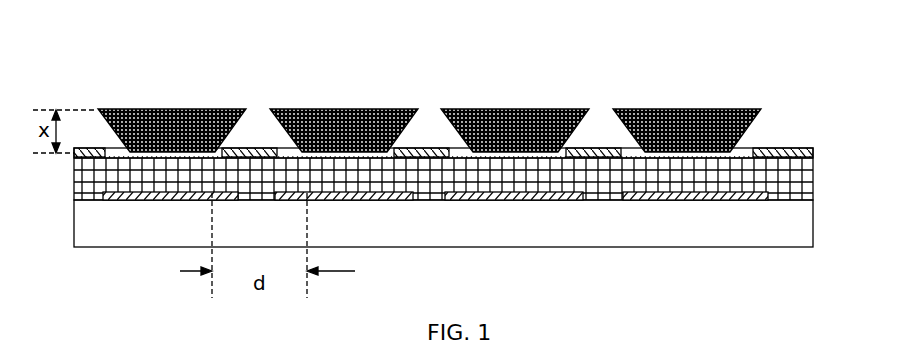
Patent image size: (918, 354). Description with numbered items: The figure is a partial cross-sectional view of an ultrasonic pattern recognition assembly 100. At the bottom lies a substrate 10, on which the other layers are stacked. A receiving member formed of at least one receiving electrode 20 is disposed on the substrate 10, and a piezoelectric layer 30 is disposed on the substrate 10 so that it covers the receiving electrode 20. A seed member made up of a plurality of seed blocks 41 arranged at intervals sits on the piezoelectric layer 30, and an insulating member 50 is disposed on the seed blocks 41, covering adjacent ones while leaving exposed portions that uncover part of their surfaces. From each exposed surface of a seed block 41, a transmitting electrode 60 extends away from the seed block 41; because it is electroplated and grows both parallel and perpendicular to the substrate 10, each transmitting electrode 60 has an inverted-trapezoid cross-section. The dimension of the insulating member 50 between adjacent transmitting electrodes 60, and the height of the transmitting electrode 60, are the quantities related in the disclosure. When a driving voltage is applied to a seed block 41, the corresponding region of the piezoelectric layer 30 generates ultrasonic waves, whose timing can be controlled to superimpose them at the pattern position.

The ultrasonic pattern recognition assembly 100 is at (412, 58).
The substrate 10 is at (807, 238).
The receiving electrode 20 is at (678, 198).
The piezoelectric layer 30 is at (813, 175).
The seed block 41 is at (703, 109).
The insulating member 50 is at (795, 150).
The transmitting electrode 60 is at (645, 109).